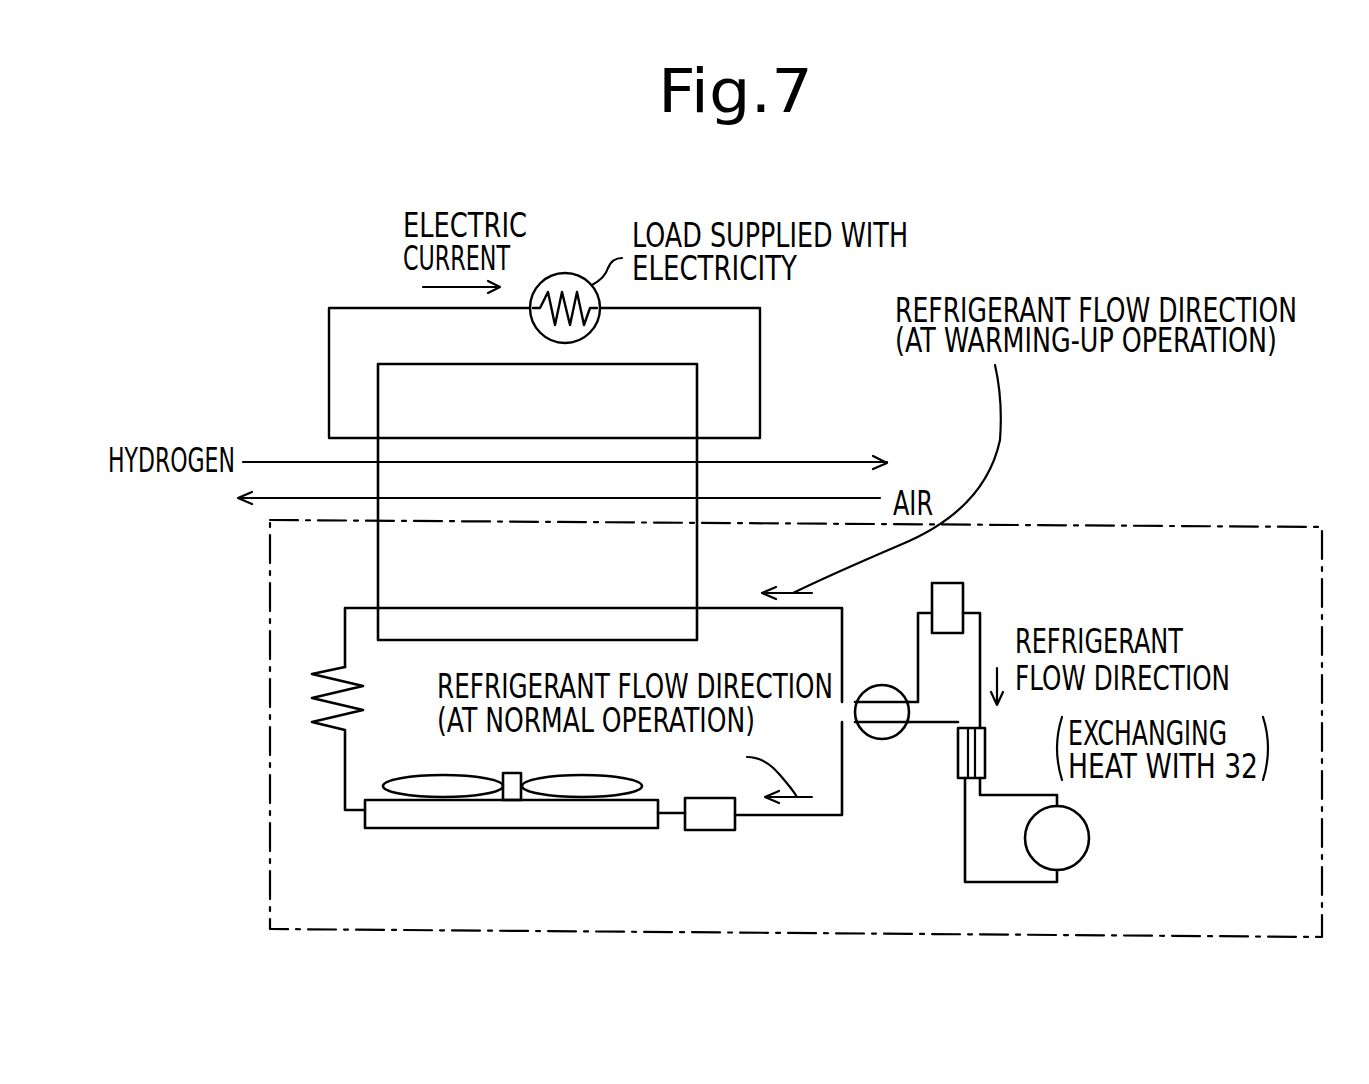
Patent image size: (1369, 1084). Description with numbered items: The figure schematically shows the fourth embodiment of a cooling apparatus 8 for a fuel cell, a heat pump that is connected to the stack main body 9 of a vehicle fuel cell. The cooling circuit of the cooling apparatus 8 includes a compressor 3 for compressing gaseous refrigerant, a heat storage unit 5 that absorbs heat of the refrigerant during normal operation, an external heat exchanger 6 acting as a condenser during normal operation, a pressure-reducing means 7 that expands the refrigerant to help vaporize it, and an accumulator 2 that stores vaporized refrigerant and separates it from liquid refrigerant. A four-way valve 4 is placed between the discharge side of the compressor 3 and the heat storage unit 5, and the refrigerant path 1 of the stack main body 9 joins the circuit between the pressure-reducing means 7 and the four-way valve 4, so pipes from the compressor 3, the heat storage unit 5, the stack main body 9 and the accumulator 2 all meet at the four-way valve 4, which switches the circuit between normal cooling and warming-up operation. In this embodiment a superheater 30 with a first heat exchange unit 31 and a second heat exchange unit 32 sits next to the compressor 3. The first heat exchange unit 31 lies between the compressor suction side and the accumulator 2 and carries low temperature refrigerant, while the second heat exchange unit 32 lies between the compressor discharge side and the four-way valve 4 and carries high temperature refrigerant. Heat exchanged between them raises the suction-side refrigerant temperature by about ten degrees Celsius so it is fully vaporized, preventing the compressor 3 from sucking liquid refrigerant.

The refrigerant path 1 is at (530, 607).
The accumulator 2 is at (963, 597).
The compressor 3 is at (1090, 836).
The four-way valve 4 is at (880, 740).
The heat storage unit 5 is at (705, 832).
The external heat exchanger 6 is at (506, 830).
The pressure-reducing means 7 is at (362, 695).
The cooling apparatus 8 is at (1107, 498).
The stack main body 9 is at (655, 378).
The superheater 30 is at (1008, 762).
The first heat exchange unit 31 is at (986, 745).
The second heat exchange unit 32 is at (957, 745).